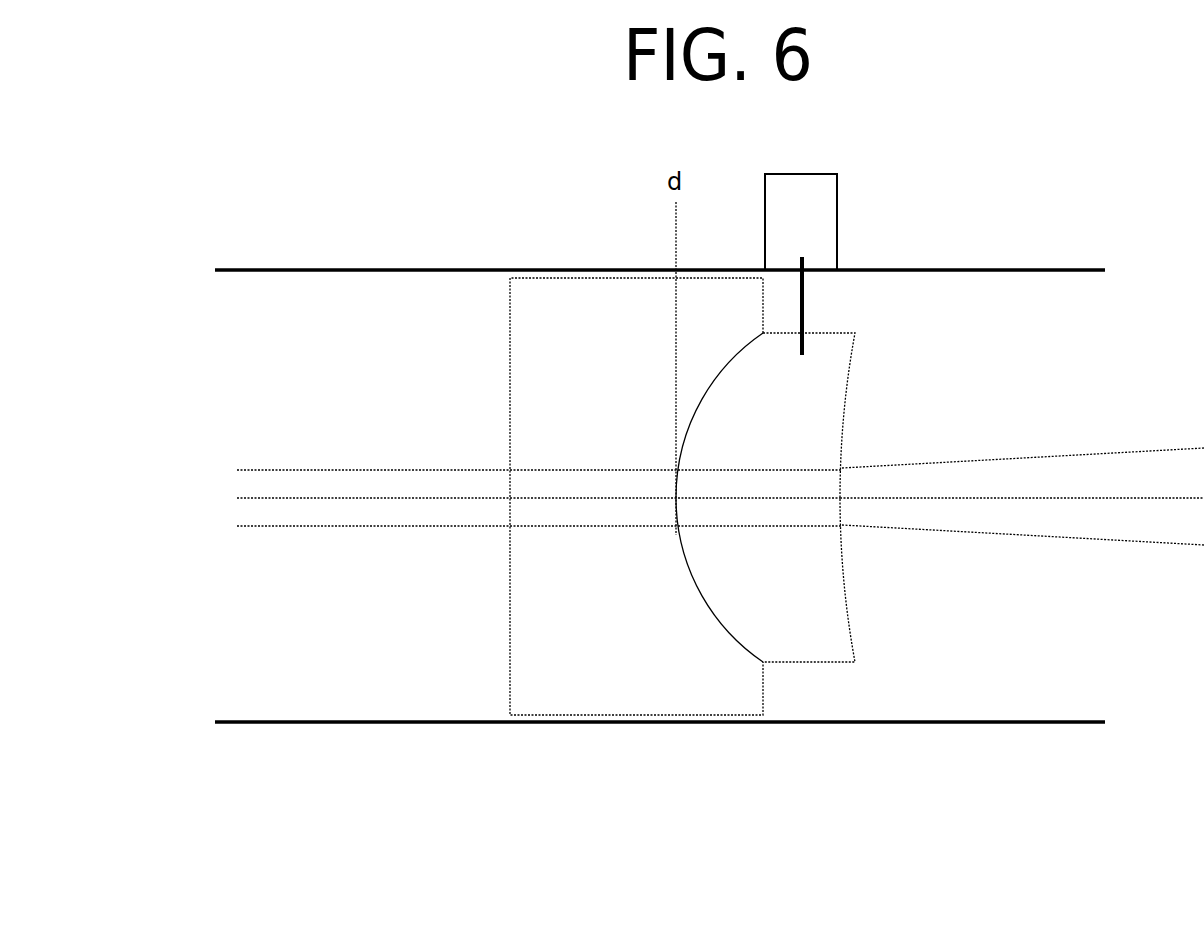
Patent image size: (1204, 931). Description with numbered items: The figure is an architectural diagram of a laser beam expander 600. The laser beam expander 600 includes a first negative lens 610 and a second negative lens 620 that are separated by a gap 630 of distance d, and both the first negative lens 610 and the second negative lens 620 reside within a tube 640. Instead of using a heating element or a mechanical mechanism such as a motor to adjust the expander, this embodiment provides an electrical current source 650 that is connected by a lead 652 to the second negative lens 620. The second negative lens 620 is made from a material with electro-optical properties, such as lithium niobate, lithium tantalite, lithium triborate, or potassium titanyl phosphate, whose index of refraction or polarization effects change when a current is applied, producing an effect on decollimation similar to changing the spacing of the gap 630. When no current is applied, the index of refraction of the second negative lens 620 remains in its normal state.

The laser beam expander 600 is at (284, 136).
The first negative lens 610 is at (628, 712).
The second negative lens 620 is at (805, 662).
The gap 630 is at (677, 533).
The tube 640 is at (1017, 269).
The electrical current source 650 is at (838, 222).
The lead 652 is at (807, 307).